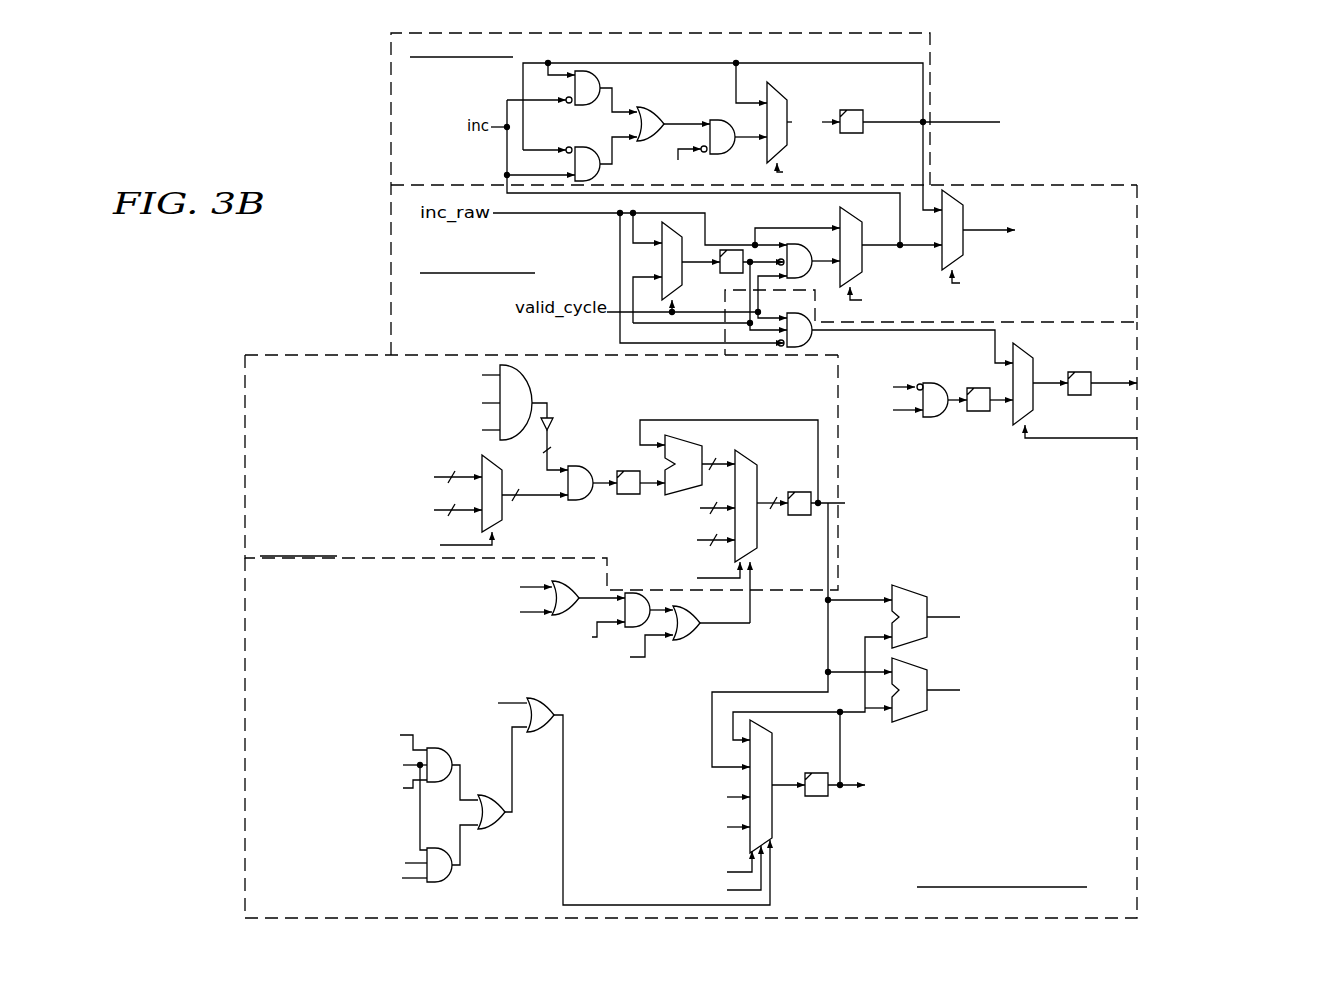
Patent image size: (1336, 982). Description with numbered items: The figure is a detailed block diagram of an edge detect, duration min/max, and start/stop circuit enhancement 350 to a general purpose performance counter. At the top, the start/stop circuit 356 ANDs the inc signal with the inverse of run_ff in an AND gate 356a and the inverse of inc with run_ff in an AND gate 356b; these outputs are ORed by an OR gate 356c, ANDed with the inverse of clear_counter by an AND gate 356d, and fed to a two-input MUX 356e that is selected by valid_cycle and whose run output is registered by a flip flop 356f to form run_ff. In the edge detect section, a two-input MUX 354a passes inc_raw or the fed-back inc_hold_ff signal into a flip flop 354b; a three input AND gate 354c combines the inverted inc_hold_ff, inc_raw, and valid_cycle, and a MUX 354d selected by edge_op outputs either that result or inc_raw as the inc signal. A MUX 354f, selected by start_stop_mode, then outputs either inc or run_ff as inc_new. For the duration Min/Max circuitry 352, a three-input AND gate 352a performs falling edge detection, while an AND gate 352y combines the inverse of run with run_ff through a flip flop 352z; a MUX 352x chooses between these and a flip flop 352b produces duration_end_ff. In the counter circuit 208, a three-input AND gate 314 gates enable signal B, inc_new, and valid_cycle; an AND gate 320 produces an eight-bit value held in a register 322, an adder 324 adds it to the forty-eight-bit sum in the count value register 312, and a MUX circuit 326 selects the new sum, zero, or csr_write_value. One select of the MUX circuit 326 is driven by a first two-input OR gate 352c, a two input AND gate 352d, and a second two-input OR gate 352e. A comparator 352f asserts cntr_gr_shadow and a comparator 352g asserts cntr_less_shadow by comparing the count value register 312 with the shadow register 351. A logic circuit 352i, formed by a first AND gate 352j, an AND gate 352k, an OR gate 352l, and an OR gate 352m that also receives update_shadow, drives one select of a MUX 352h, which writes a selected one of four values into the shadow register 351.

The edge detect, duration min/max, and start/stop circuit enhancement 350 is at (1033, 140).
The start/stop circuit 356 is at (450, 167).
The AND gate 356a is at (575, 146).
The AND gate 356b is at (600, 80).
The OR gate 356c is at (655, 108).
The AND gate 356d is at (722, 130).
The two-input MUX 356e is at (787, 96).
The flip flop 356f is at (855, 110).
The two-input MUX 354a is at (672, 222).
The flip flop 354b is at (735, 273).
The three input AND gate 354c is at (797, 243).
The two-input MUX 354d is at (862, 258).
The two-input MUX 354f is at (958, 205).
The three-input AND gate 352a is at (808, 340).
The MUX 352x is at (1023, 355).
The AND gate 352y is at (928, 383).
The flip flop 352z is at (978, 388).
The flip flop 352b is at (1078, 395).
The counter circuit 208 is at (325, 426).
The three-input AND gate 314 is at (530, 380).
The AND gate 320 is at (572, 500).
The register 322 is at (626, 494).
The adder 324 is at (685, 435).
The MUX circuit 326 is at (745, 452).
The count value register 312 is at (800, 492).
The duration Min/Max circuitry 352 is at (1095, 555).
The first two-input OR gate 352c is at (555, 581).
The two input AND gate 352d is at (645, 597).
The second two-input OR gate 352e is at (695, 634).
The comparator 352f is at (915, 585).
The comparator 352g is at (915, 658).
The OR gate 352m is at (550, 702).
The first AND gate 352j is at (443, 748).
The OR gate 352l is at (501, 822).
The AND gate 352k is at (450, 872).
The logic circuit 352i is at (600, 768).
The MUX 352h is at (775, 817).
The shadow register 351 is at (815, 796).